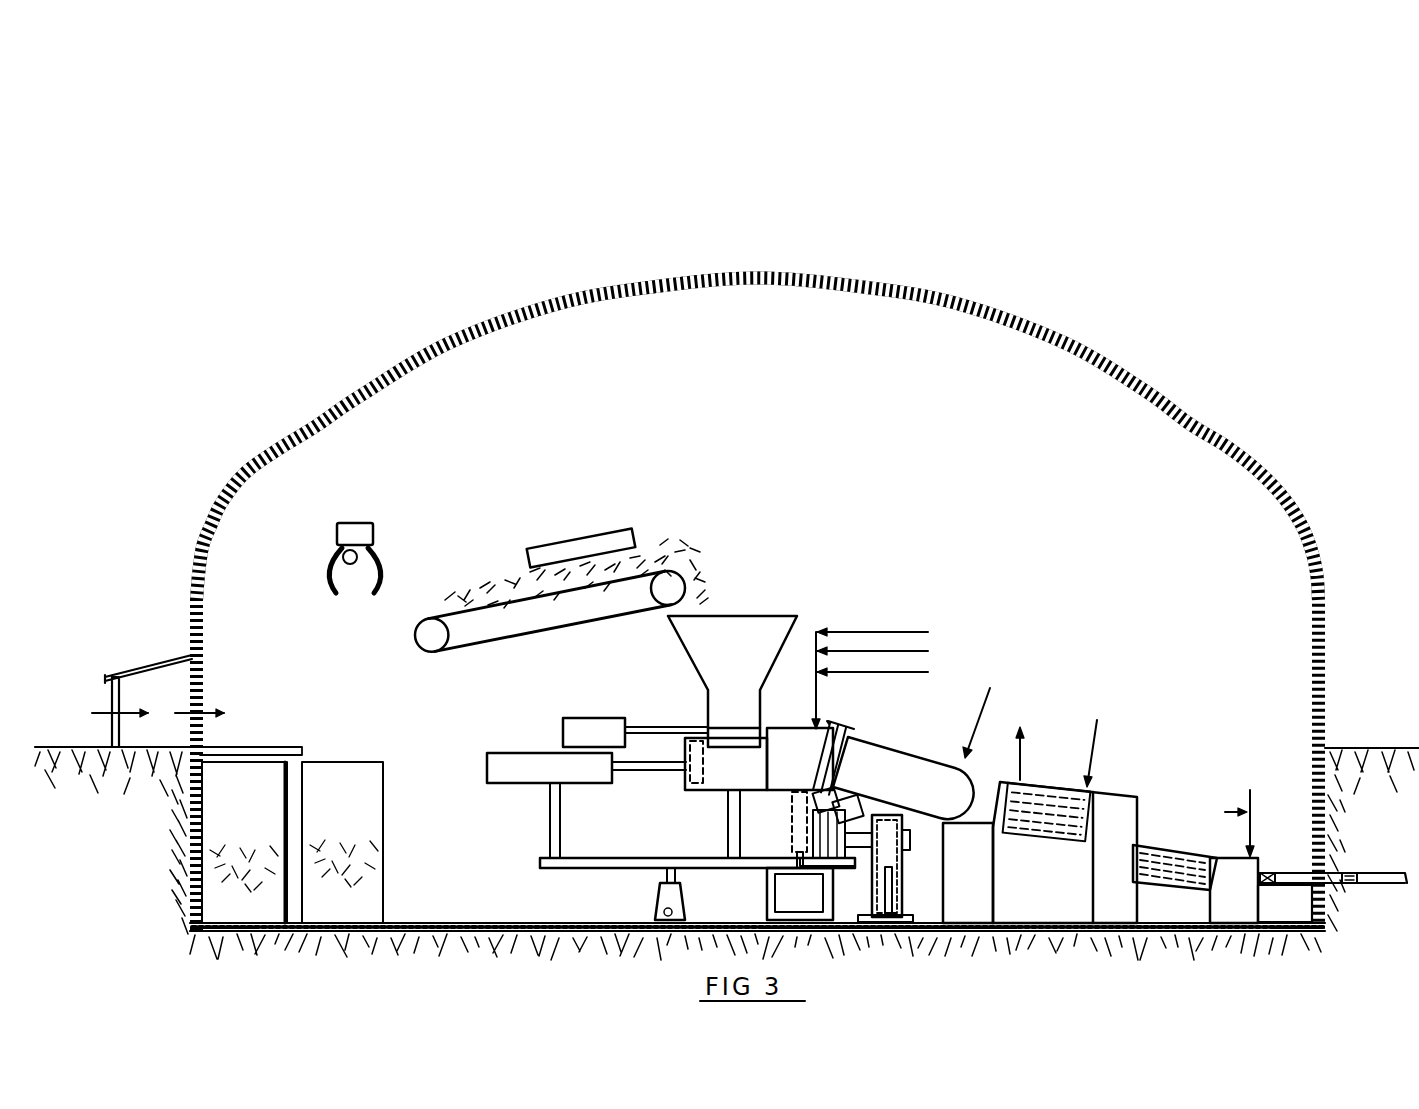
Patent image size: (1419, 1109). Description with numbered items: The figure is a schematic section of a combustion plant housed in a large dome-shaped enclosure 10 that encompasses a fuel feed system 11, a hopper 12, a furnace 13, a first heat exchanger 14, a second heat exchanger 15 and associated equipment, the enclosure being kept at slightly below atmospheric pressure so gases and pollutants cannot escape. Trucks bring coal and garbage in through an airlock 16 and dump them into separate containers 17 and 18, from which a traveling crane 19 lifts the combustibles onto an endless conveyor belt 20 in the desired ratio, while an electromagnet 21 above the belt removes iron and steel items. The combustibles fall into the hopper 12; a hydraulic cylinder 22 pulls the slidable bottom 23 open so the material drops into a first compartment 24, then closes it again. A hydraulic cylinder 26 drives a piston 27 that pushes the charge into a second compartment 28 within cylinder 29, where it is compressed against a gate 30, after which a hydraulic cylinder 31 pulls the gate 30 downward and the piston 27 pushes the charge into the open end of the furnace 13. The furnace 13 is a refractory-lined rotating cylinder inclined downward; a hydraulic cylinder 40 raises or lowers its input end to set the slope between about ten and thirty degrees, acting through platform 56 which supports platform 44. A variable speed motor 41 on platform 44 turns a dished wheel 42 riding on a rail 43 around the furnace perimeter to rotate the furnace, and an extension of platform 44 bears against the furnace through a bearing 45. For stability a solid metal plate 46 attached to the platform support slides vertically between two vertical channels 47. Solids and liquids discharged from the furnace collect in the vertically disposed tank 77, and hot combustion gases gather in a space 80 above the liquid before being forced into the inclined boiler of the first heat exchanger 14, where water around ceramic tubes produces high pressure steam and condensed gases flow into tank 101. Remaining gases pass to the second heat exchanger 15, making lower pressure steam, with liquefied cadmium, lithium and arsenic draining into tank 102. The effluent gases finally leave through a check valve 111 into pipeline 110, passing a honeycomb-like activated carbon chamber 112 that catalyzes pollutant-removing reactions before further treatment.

The dome-shaped enclosure 10 is at (1062, 472).
The fuel feed system 11 is at (491, 570).
The hopper 12 is at (750, 615).
The furnace 13 is at (902, 750).
The first heat exchanger 14 is at (1057, 838).
The second heat exchanger 15 is at (1197, 886).
The airlock 16 is at (160, 658).
The container 17 is at (258, 807).
The container 18 is at (360, 807).
The traveling crane 19 is at (375, 490).
The endless conveyor belt 20 is at (553, 630).
The electromagnet 21 is at (593, 530).
The hydraulic cylinder 22 is at (605, 718).
The slidable bottom 23 is at (750, 713).
The first compartment 24 is at (750, 787).
The hydraulic cylinder 26 is at (512, 752).
The piston 27 is at (683, 778).
The second compartment 28 is at (805, 774).
The cylinder 29 is at (777, 727).
The gate 30 is at (792, 824).
The hydraulic cylinder 31 is at (767, 897).
The hydraulic cylinder 40 is at (655, 888).
The variable speed motor 41 is at (866, 805).
The dished wheel 42 is at (840, 793).
The rail 43 is at (855, 724).
The platform 44 is at (826, 868).
The bearing 45 is at (838, 722).
The solid metal plate 46 is at (902, 842).
The vertical channels 47 is at (900, 880).
The platform 56 is at (640, 858).
The tank 77 is at (988, 894).
The space 80 is at (974, 768).
The tank 101 is at (1125, 901).
The tank 102 is at (1255, 921).
The pipeline 110 is at (1400, 845).
The check valve 111 is at (1267, 870).
The honeycomb-like chamber 112 is at (1350, 885).